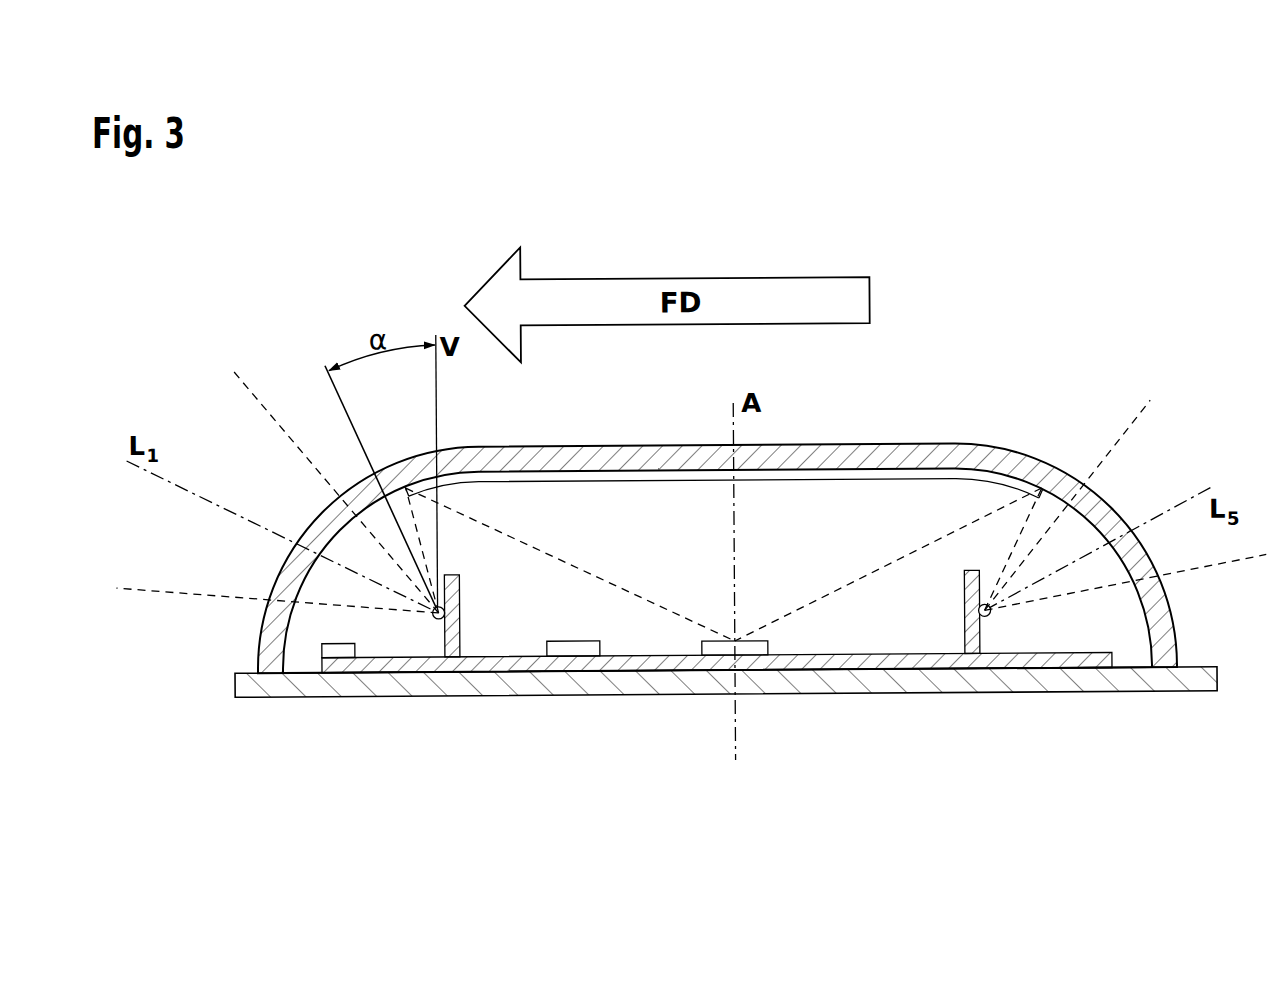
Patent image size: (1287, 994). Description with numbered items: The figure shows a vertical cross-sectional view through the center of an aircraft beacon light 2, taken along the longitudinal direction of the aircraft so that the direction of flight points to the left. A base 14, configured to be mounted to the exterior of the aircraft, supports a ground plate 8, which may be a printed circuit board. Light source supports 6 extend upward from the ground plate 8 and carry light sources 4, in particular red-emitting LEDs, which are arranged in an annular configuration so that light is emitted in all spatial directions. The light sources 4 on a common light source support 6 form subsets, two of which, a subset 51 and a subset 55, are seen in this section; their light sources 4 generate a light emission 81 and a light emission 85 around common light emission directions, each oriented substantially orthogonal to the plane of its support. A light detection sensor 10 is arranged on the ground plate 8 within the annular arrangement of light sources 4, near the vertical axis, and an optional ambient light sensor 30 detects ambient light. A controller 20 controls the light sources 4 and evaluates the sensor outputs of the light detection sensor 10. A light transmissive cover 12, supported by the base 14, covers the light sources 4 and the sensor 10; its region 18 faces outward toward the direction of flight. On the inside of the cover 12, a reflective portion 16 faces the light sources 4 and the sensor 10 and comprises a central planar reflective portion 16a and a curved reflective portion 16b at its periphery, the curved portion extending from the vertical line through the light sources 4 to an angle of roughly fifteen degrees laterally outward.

The aircraft beacon light 2 is at (1223, 343).
The light sources 4 is at (730, 676).
The light source supports 6 is at (471, 596).
The ground plate 8 is at (857, 661).
The light detection sensor 10 is at (752, 619).
The light transmissive cover 12 is at (964, 455).
The base 14 is at (662, 684).
The reflective portion 16 is at (724, 524).
The central planar reflective portion 16a is at (655, 491).
The curved reflective portion 16b is at (425, 507).
The exit surface of cover 18 is at (252, 581).
The controller 20 is at (574, 648).
The ambient light sensor 30 is at (338, 648).
The subset of light sources 51 is at (426, 627).
The subset of light sources 55 is at (1003, 625).
The light emission 81 is at (260, 369).
The light emission 85 is at (1117, 411).